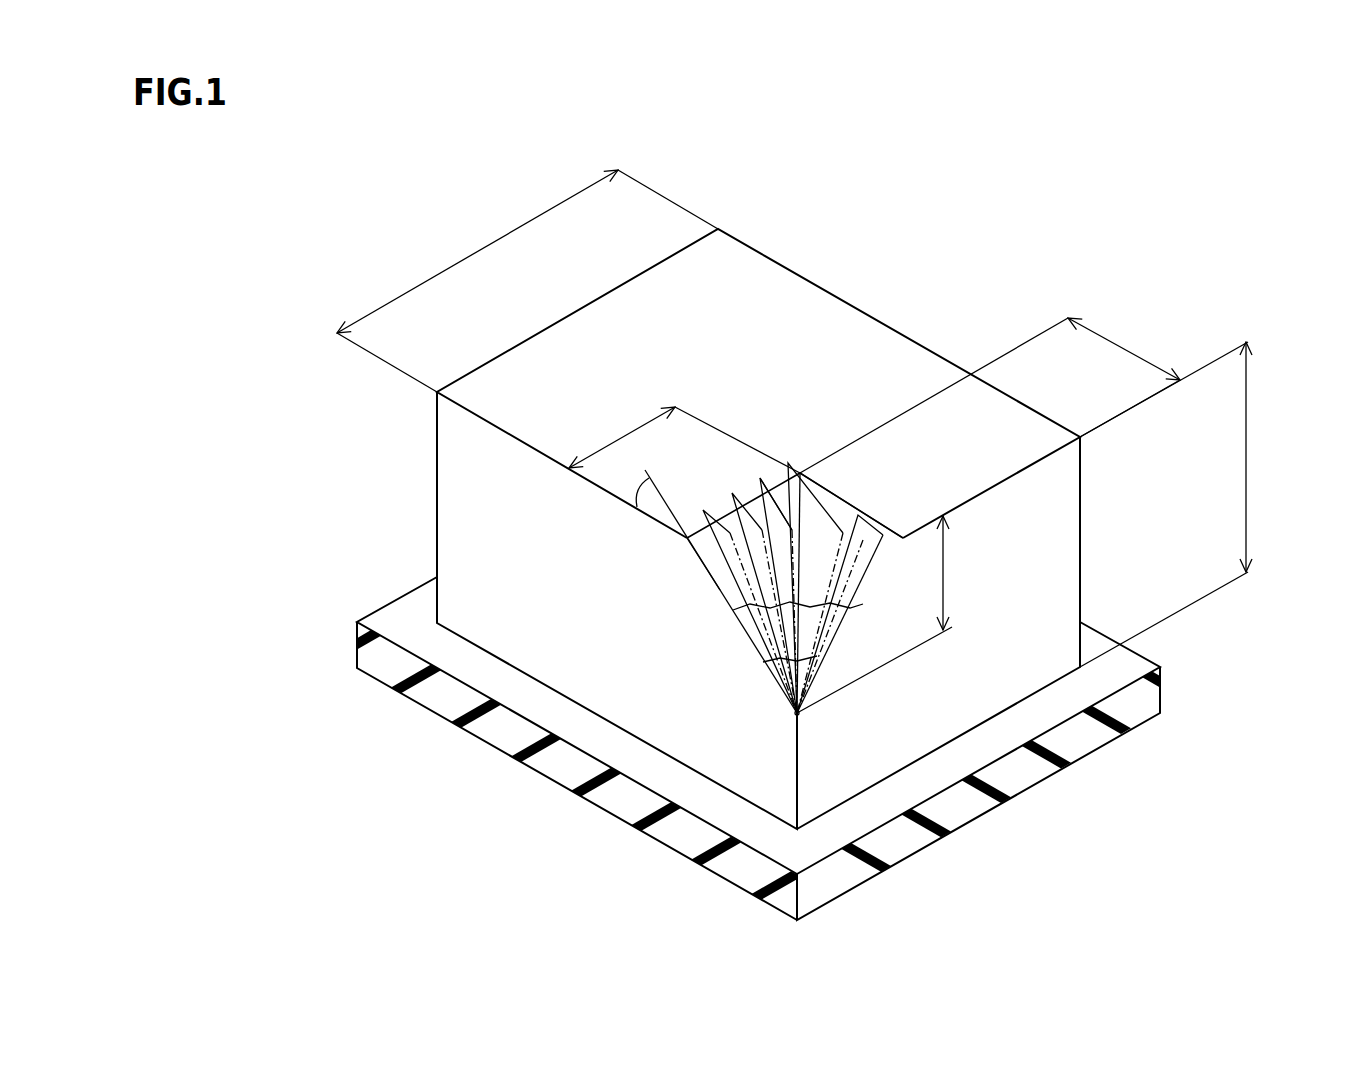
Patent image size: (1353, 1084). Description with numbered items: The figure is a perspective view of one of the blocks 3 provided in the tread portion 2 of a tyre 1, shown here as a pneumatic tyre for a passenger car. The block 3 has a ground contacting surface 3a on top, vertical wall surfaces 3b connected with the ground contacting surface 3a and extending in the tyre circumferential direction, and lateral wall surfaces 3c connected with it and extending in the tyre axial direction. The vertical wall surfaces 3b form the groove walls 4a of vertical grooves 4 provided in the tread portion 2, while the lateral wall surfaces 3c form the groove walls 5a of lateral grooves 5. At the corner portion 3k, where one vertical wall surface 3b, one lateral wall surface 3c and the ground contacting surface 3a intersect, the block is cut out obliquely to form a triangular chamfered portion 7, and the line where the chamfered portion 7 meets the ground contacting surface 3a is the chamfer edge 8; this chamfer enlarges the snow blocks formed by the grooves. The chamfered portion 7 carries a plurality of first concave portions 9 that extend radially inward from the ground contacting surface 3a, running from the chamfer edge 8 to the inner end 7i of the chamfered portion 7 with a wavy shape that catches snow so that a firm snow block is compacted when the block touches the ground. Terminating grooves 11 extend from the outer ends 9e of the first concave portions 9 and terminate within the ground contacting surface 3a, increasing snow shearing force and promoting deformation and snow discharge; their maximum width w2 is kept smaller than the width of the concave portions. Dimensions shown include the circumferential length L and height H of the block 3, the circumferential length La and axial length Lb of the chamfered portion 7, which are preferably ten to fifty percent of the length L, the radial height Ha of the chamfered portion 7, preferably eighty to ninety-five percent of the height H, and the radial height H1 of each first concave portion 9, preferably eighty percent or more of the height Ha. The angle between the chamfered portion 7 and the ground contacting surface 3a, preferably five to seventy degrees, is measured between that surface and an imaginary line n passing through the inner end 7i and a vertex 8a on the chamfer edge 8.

The tyre 1 is at (842, 185).
The tread portion 2 is at (765, 227).
The block 3 is at (825, 275).
The ground contacting surface 3a is at (823, 343).
The vertical wall surface 3b is at (1012, 633).
The lateral wall surface 3c is at (576, 610).
The corner portion 3k is at (700, 587).
The vertical groove 4 is at (994, 755).
The groove wall 4a is at (1040, 642).
The lateral groove 5 is at (489, 682).
The groove wall 5a is at (590, 652).
The chamfered portion 7 is at (868, 583).
The inner end 7i is at (797, 713).
The chamfer edge 8 is at (893, 554).
The vertex 8a is at (695, 528).
The first concave portion 9 is at (758, 623).
The outer end 9e is at (777, 610).
The terminating groove 11 is at (867, 517).
The length L is at (527, 281).
The length La is at (684, 440).
The length Lb is at (990, 391).
The height H is at (1175, 504).
The height Ha is at (968, 677).
The height H1 is at (946, 592).
The width w2 is at (803, 473).
The imaginary line n is at (692, 490).